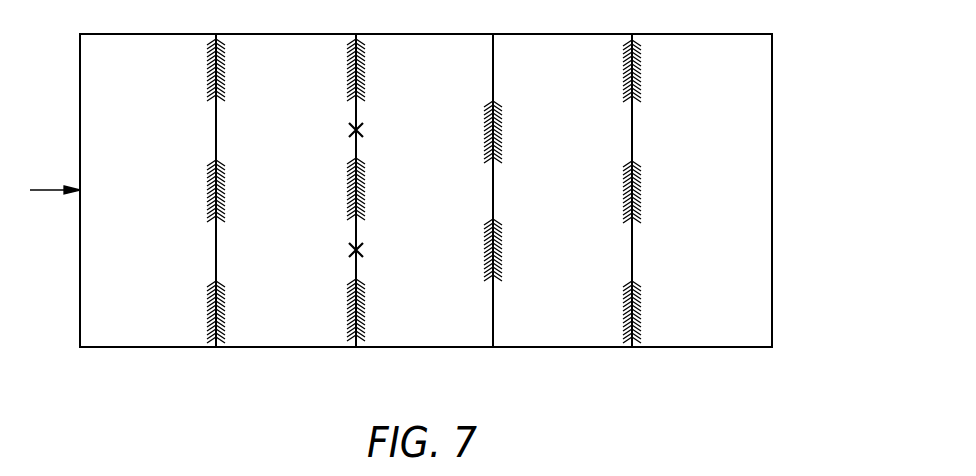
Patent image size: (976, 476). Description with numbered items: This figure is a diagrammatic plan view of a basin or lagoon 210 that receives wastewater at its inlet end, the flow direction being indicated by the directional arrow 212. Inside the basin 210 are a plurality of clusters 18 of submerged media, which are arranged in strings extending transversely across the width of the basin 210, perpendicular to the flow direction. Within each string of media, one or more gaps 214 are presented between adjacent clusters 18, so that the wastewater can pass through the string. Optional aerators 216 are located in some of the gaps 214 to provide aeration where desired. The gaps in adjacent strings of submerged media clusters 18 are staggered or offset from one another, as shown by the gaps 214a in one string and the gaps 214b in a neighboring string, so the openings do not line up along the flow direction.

The clusters of submerged media 18 is at (207, 89).
The basin or lagoon 210 is at (772, 218).
The directional arrow 212 is at (47, 190).
The gaps 214 is at (216, 110).
The gap 214a is at (494, 81).
The gap 214b is at (633, 126).
The aerators 216 is at (363, 128).